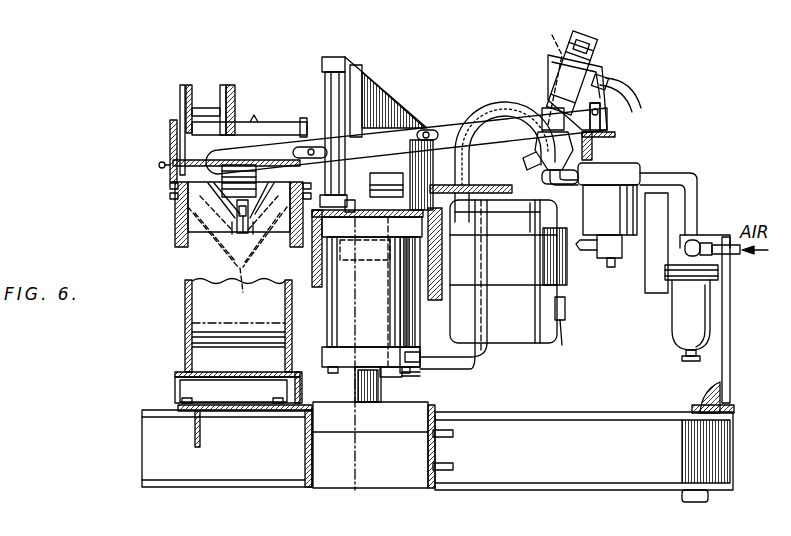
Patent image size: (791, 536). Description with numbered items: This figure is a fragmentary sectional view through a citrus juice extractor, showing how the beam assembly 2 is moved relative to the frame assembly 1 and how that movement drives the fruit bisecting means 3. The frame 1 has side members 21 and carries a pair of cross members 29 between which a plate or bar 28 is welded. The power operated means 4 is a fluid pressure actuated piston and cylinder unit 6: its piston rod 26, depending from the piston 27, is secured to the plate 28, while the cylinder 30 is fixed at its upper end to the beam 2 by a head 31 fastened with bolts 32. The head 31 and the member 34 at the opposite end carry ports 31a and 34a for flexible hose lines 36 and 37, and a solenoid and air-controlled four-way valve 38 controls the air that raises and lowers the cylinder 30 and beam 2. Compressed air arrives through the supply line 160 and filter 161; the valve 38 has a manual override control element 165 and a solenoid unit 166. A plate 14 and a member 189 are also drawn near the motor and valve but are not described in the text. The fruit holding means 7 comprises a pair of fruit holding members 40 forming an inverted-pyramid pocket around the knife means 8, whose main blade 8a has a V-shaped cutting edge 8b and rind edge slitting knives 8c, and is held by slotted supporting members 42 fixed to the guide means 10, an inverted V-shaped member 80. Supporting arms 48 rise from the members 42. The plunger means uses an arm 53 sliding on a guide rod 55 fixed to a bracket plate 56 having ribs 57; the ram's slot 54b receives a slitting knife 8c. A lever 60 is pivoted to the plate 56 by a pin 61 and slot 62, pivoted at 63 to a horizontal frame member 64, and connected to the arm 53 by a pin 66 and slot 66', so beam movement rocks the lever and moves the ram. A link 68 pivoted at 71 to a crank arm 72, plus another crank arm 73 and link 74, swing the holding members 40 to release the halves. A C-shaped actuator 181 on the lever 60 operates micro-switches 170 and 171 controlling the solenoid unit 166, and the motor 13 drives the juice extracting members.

The frame assembly 1 is at (132, 436).
The beam assembly 2 is at (446, 268).
The fruit bisecting means 3 is at (222, 284).
The power operated means 4 is at (416, 342).
The piston and cylinder unit 6 is at (340, 325).
The whole fruit holding means 7 is at (176, 8).
The knife means 8 is at (172, 186).
The main blade 8a is at (200, 238).
The V-shaped cutting edge 8b is at (200, 202).
The rind edge slitting knives 8c is at (238, 238).
The guide means 10 is at (176, 350).
The motor 13 is at (530, 340).
The plate 14 is at (497, 180).
The side members 21 is at (603, 478).
The piston rod 26 is at (357, 387).
The piston 27 is at (410, 250).
The plate or bar 28 is at (396, 426).
The cross members 29 is at (305, 454).
The cylinder 30 is at (318, 280).
The head 31 is at (298, 248).
The port 31a is at (365, 250).
The bolts 32 is at (413, 326).
The member 34 is at (322, 352).
The port 34a is at (402, 372).
The flexible hose line 36 is at (478, 106).
The flexible hose line 37 is at (515, 108).
The four-way valve 38 is at (646, 163).
The fruit holding members 40 is at (247, 290).
The slotted supporting members 42 is at (175, 226).
The supporting arms 48 is at (168, 146).
The arm 53 is at (264, 132).
The slot 54b is at (252, 244).
The guide rod 55 is at (325, 80).
The bracket plate 56 is at (388, 108).
The ribs 57 is at (362, 90).
The lever 60 is at (428, 128).
The pin 61 is at (432, 130).
The slot 62 is at (421, 143).
The pivot 63 is at (602, 118).
The horizontal frame member 64 is at (606, 136).
The pin 66 is at (310, 126).
The slot 66' is at (406, 141).
The link 68 is at (222, 110).
The pivot 71 is at (224, 86).
The crank arm 72 is at (236, 102).
The crank arm 73 is at (190, 86).
The link 74 is at (180, 100).
The inverted V-shaped member 80 is at (186, 318).
The compressed air supply line 160 is at (742, 256).
The filter 161 is at (682, 338).
The manually operable override control element 165 is at (612, 268).
The solenoid unit 166 is at (602, 252).
The micro-switch 170 is at (548, 72).
The micro-switch 171 is at (546, 69).
The C-shaped actuator 181 is at (596, 42).
The plate 189 is at (658, 290).